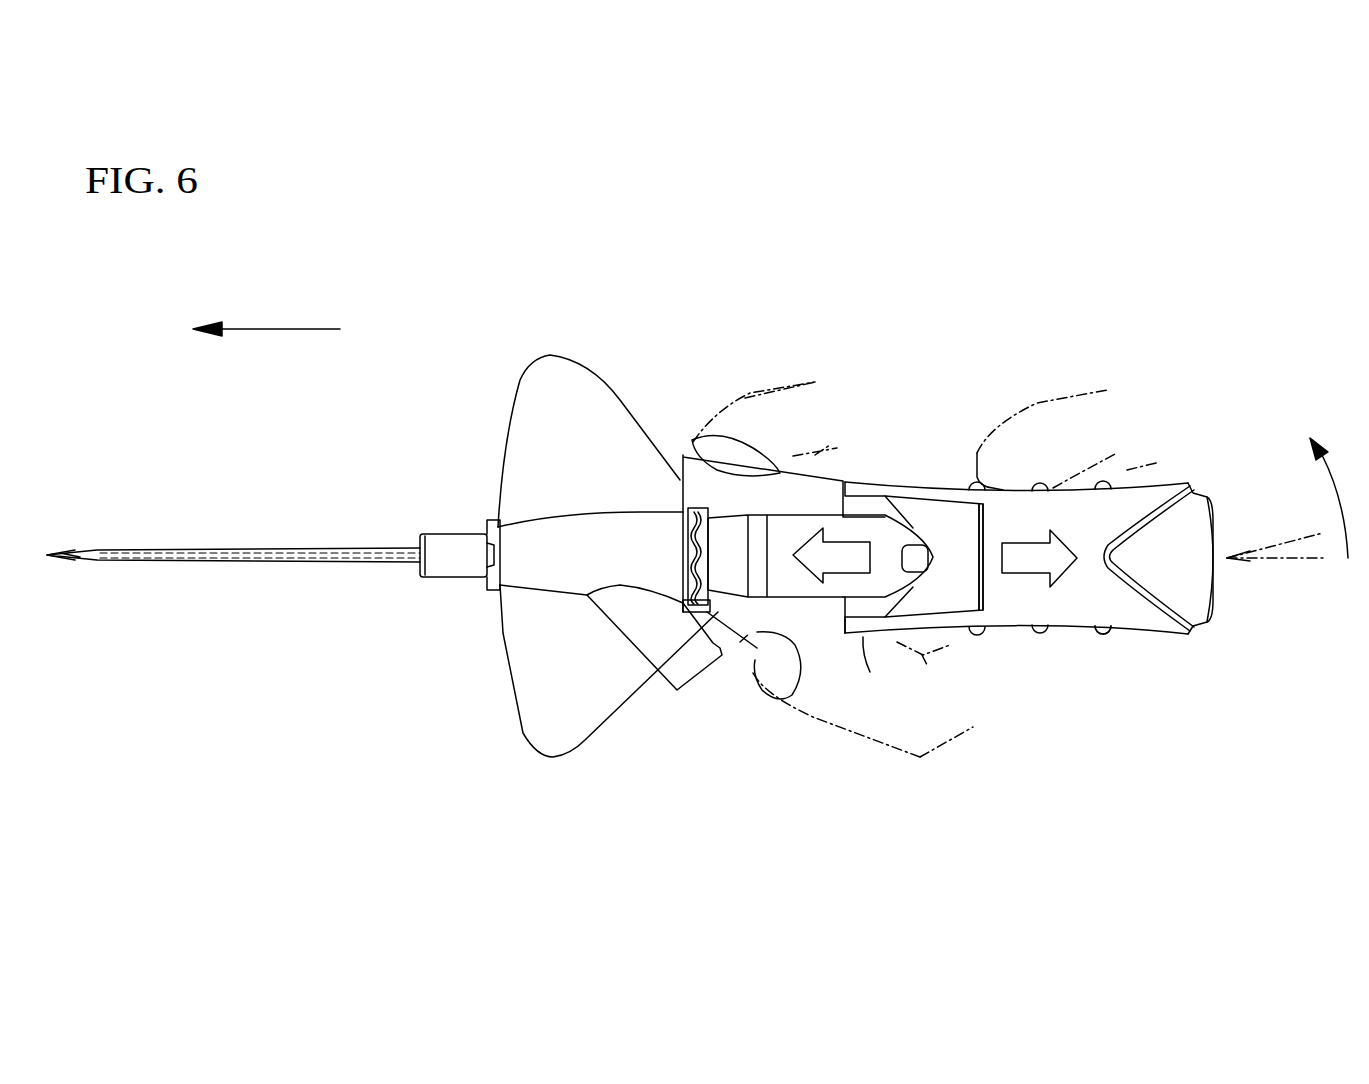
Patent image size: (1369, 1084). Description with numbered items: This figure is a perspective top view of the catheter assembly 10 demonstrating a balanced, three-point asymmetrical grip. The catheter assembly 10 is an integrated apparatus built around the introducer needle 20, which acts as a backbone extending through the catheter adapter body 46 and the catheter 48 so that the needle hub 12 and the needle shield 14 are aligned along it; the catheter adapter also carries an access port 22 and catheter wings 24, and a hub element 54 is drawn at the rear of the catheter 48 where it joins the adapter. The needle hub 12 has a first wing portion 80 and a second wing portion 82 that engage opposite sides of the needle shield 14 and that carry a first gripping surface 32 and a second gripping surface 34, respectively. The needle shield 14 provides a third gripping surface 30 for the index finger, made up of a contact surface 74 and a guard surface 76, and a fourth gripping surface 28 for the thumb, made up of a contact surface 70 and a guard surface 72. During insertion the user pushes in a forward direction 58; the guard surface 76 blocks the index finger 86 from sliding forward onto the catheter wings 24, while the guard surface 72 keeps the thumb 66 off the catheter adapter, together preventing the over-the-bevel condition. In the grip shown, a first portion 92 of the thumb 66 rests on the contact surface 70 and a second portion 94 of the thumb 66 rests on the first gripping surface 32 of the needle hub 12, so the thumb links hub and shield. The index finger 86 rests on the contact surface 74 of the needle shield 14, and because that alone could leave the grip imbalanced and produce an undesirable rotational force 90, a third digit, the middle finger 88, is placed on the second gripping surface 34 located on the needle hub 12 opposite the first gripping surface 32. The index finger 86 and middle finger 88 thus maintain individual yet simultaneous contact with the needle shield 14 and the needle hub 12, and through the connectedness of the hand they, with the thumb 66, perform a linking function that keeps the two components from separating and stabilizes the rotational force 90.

The catheter assembly 10 is at (1103, 258).
The needle hub 12 is at (1165, 623).
The needle shield 14 is at (823, 485).
The introducer needle 20 is at (62, 560).
The access port 22 is at (647, 622).
The catheter wings 24 is at (543, 390).
The fourth gripping surface 28 is at (753, 632).
The third gripping surface 30 is at (694, 440).
The first gripping surface 32 is at (1102, 630).
The second gripping surface 34 is at (1104, 488).
The catheter adapter body 46 is at (547, 575).
The catheter 48 is at (182, 548).
The hub 54 is at (445, 548).
The forward direction 58 is at (277, 327).
The thumb 66 is at (867, 740).
The contact surface 70 is at (807, 637).
The guard surface 72 is at (710, 627).
The contact surface 74 is at (782, 495).
The guard surface 76 is at (683, 486).
The first wing portion 80 is at (893, 638).
The second wing portion 82 is at (905, 480).
The index finger 86 is at (813, 382).
The middle finger 88 is at (1107, 390).
The rotational force 90 is at (1335, 479).
The first portion of the user's thumb 92 is at (773, 700).
The second portion of the user's thumb 94 is at (863, 637).